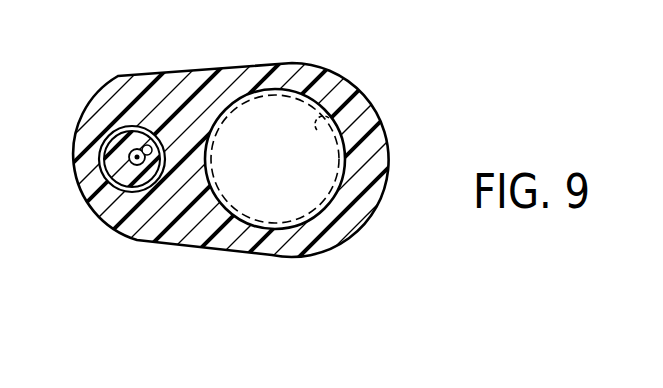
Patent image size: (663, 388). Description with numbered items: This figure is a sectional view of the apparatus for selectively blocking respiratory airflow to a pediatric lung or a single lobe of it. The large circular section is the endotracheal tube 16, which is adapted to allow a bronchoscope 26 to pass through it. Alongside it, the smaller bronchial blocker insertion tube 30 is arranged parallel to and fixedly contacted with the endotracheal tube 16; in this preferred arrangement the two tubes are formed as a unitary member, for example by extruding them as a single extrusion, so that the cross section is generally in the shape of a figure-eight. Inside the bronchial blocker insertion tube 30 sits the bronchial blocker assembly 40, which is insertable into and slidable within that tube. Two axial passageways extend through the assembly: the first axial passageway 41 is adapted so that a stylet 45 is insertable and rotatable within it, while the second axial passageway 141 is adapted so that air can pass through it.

The bronchial blocker insertion tube 30 is at (90, 193).
The endotracheal tube 16 is at (331, 198).
The bronchoscope 26 is at (333, 117).
The bronchial blocker assembly 40 is at (110, 129).
The first axial passageway 41 is at (148, 150).
The second axial passageway 141 is at (104, 187).
The stylet 45 is at (148, 186).